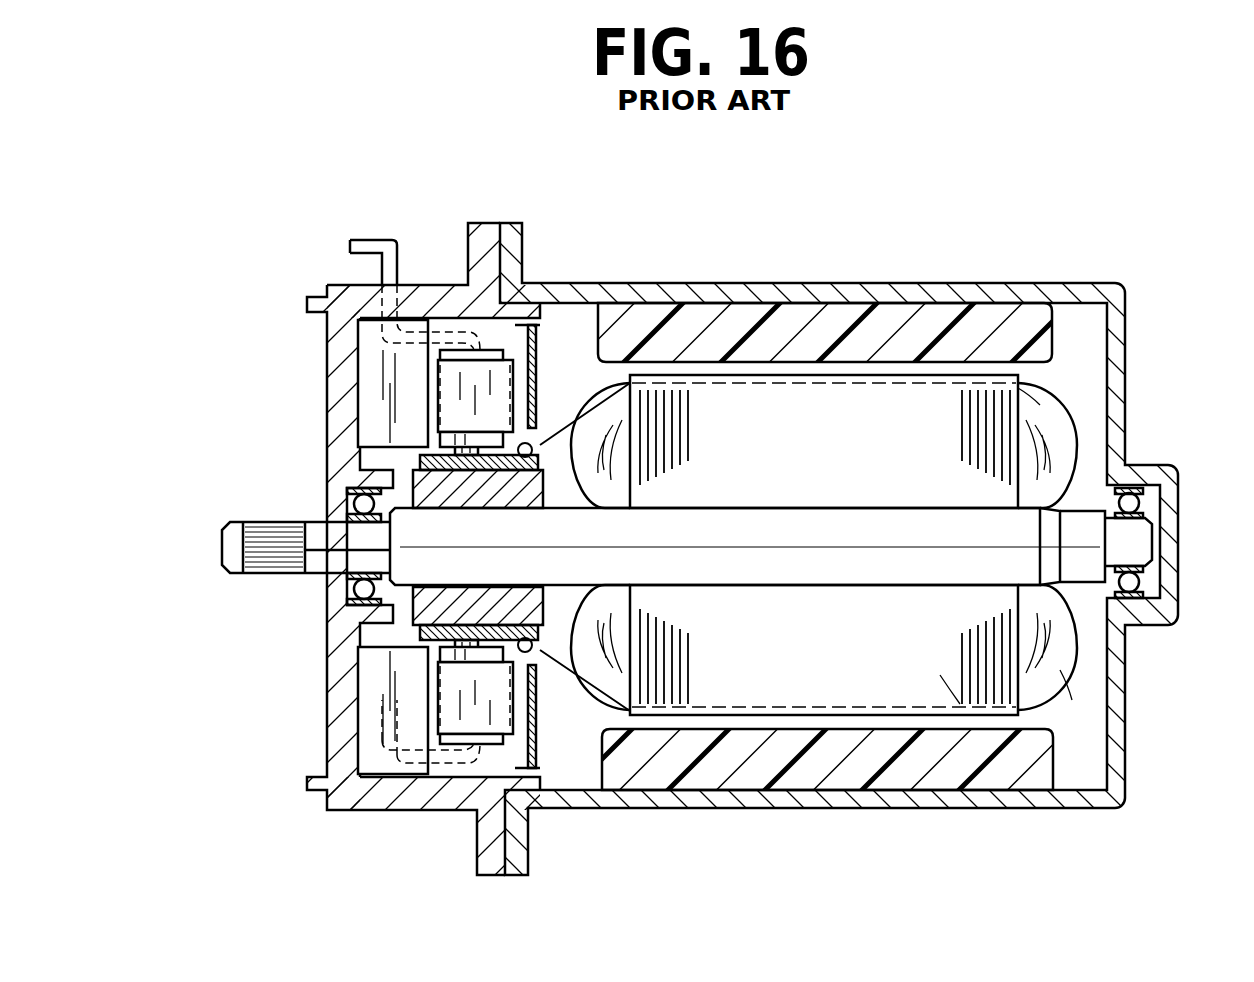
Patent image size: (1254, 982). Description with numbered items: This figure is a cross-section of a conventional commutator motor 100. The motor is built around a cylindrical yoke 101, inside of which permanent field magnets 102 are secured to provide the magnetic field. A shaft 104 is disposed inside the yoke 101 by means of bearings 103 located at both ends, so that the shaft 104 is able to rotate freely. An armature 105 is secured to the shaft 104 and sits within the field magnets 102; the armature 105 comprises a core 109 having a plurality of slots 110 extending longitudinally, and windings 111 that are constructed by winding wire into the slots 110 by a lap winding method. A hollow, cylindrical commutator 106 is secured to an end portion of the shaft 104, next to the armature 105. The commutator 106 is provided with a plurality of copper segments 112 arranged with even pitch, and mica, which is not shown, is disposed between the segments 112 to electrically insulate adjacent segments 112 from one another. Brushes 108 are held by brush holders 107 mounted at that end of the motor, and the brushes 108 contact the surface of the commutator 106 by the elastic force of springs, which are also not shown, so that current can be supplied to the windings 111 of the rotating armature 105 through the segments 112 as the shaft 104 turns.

The commutator motor 100 is at (860, 165).
The cylindrical yoke 101 is at (618, 295).
The permanent field magnets 102 is at (747, 320).
The bearings 103 is at (347, 596).
The shaft 104 is at (1078, 520).
The armature 105 is at (895, 408).
The commutator 106 is at (430, 647).
The brush holders 107 is at (378, 360).
The brushes 108 is at (445, 446).
The core 109 is at (948, 672).
The slots 110 is at (1040, 388).
The windings 111 is at (1065, 675).
The copper segments 112 is at (420, 462).